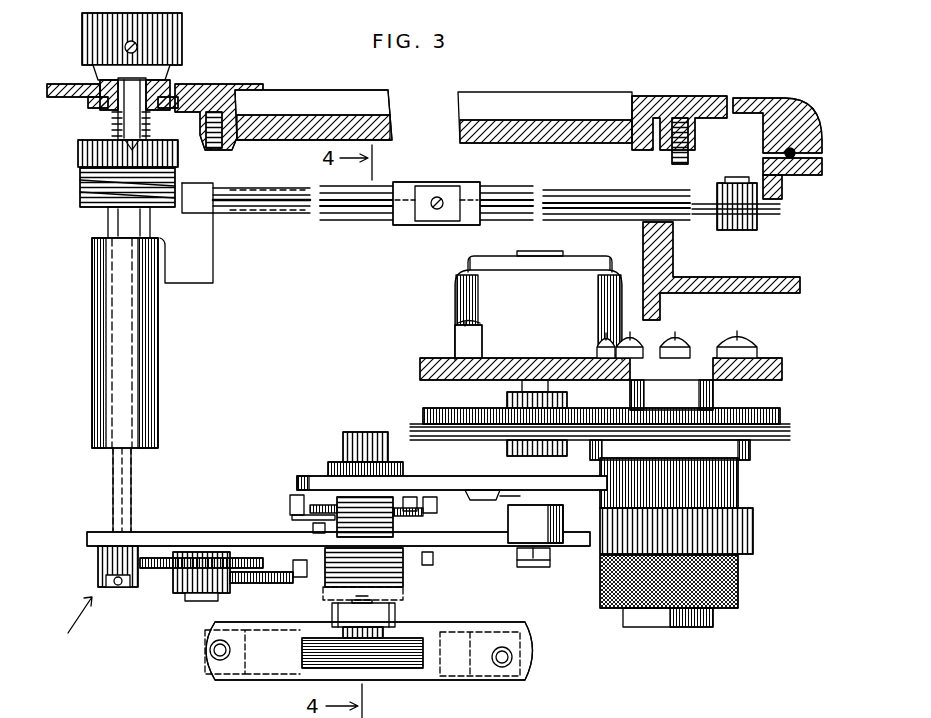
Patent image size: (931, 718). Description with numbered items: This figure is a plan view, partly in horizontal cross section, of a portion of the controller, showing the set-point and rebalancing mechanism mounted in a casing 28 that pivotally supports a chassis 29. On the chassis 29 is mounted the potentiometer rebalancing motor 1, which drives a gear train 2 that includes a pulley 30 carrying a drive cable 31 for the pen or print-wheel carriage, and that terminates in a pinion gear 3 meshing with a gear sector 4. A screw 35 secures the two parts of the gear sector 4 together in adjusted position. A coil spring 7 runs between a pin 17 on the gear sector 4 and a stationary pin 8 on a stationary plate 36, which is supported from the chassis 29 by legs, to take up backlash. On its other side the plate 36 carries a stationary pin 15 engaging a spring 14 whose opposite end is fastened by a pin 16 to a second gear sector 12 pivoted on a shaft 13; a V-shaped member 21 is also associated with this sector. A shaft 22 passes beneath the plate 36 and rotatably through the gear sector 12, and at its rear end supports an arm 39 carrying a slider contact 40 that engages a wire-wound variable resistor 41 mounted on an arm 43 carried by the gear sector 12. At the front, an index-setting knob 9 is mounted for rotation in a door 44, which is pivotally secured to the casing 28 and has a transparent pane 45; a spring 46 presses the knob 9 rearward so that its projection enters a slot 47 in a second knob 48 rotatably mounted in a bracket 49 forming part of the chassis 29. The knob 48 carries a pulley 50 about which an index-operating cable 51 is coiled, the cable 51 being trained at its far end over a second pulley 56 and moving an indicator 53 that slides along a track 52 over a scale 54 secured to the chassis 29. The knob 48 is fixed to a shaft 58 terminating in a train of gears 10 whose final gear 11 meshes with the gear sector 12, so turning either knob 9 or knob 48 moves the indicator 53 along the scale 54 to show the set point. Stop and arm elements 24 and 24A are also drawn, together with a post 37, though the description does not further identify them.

The potentiometer rebalancing motor 1 is at (458, 296).
The gear train 2 is at (520, 385).
The pinion gear 3 is at (506, 444).
The gear sector 4 is at (600, 478).
The spring 7 is at (394, 530).
The stationary pin 8 is at (313, 528).
The index-setting knob 9 is at (182, 30).
The train of gears 10 is at (71, 624).
The pinion gear 11 is at (176, 585).
The gear sector 12 is at (245, 583).
The shaft 13 is at (362, 430).
The spring 14 is at (402, 574).
The stationary pin 15 is at (433, 561).
The pin 16 is at (293, 568).
The pin 17 is at (418, 505).
The V-shaped member 21 is at (290, 507).
The shaft 22 is at (393, 630).
The arm 24 is at (292, 520).
The arm 24A is at (430, 513).
The casing 28 is at (778, 200).
The chassis 29 is at (205, 268).
The pulley 30 is at (476, 432).
The drive cable 31 is at (786, 438).
The screw 35 is at (470, 500).
The stationary plate 36 is at (150, 532).
The post 37 is at (556, 518).
The arm 39 is at (332, 607).
The slider contact 40 is at (332, 620).
The variable resistor 41 is at (382, 668).
The arm 43 is at (260, 624).
The door 44 is at (226, 95).
The pane 45 is at (470, 142).
The spring 46 is at (116, 122).
The slot 47 is at (146, 134).
The second knob 48 is at (78, 152).
The bracket 49 is at (92, 322).
The pulley 50 is at (82, 200).
The index-operating cable 51 is at (190, 196).
The track 52 is at (254, 213).
The indicator 53 is at (452, 222).
The scale 54 is at (510, 192).
The second pulley 56 is at (712, 204).
The shaft 58 is at (113, 474).